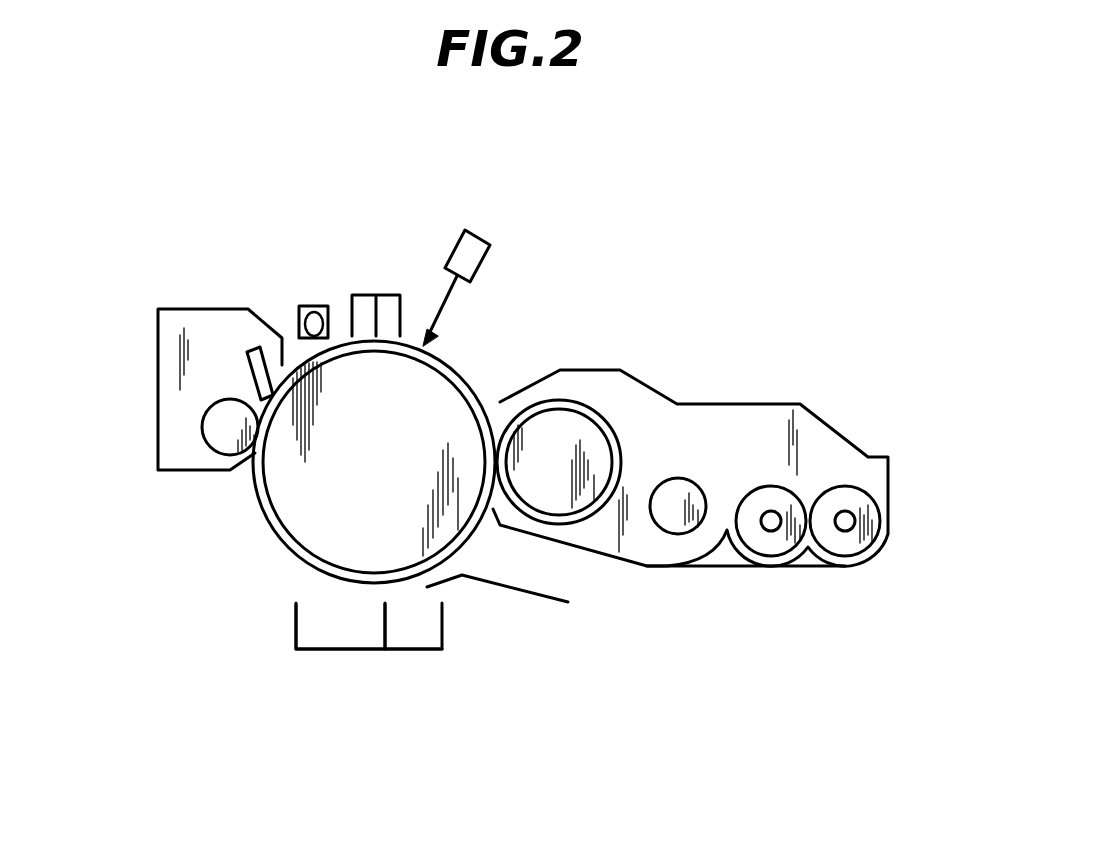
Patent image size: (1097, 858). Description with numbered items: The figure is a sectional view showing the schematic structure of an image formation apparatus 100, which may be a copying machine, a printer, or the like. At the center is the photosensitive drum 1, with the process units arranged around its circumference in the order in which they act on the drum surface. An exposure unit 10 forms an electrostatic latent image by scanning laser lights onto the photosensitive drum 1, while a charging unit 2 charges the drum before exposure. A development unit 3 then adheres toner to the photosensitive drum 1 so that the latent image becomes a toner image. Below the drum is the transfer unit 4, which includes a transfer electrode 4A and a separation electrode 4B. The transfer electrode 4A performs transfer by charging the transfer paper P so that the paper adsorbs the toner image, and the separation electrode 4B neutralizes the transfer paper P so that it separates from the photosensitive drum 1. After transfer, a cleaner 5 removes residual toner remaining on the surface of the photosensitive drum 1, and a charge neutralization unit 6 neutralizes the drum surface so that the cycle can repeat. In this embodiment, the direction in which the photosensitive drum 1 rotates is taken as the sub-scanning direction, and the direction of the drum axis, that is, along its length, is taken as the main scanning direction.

The image formation apparatus 100 is at (692, 213).
The photosensitive drum 1 is at (304, 530).
The charging unit 2 is at (367, 295).
The development unit 3 is at (733, 405).
The transfer unit 4 is at (295, 625).
The transfer electrode 4A is at (417, 642).
The separation electrode 4B is at (338, 642).
The cleaner 5 is at (202, 309).
The charge neutralization unit 6 is at (310, 305).
The exposure unit 10 is at (484, 241).
The transfer paper P is at (535, 593).